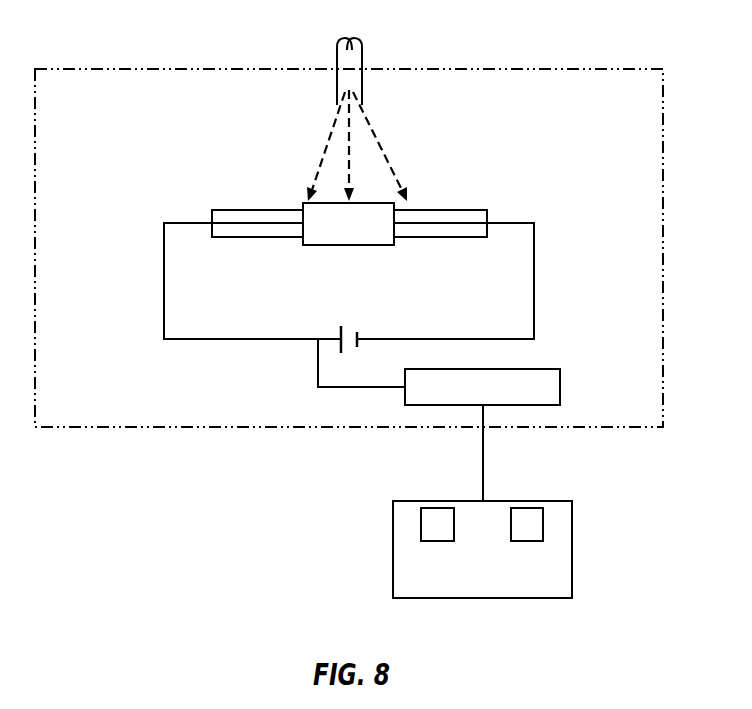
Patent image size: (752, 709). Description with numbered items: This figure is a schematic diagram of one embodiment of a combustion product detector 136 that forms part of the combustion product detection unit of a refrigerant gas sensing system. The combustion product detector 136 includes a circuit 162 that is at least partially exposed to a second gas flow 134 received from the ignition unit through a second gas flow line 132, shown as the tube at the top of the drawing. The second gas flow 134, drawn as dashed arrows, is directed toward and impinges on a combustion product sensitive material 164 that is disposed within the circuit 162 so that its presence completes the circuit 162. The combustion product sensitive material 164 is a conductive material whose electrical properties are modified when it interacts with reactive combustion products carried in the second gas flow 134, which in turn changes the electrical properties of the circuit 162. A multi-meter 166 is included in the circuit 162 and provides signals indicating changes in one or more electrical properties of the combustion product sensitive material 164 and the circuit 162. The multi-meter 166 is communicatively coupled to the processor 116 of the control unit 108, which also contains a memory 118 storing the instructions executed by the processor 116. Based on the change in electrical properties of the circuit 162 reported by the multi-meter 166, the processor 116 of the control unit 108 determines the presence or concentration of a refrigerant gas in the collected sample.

The control unit 108 is at (572, 545).
The processor 116 is at (437, 508).
The memory 118 is at (527, 508).
The second gas flow line 132 is at (363, 52).
The second gas flow 134 is at (345, 88).
The combustion product detector 136 is at (663, 247).
The circuit 162 is at (534, 278).
The combustion product sensitive material 164 is at (347, 245).
The multi-meter 166 is at (560, 382).